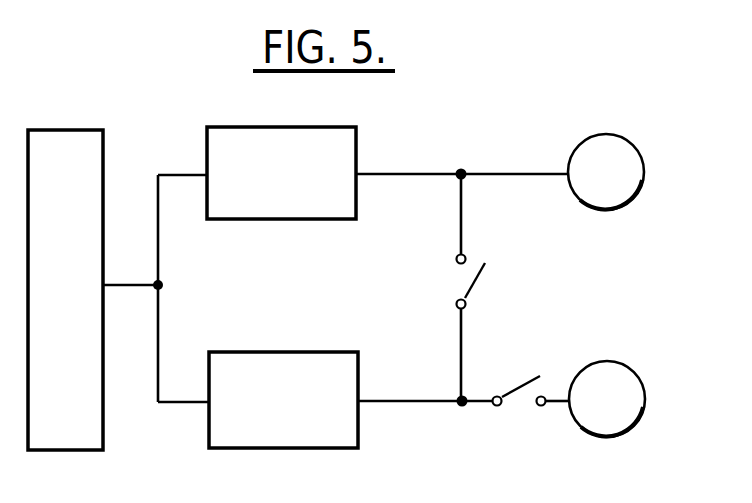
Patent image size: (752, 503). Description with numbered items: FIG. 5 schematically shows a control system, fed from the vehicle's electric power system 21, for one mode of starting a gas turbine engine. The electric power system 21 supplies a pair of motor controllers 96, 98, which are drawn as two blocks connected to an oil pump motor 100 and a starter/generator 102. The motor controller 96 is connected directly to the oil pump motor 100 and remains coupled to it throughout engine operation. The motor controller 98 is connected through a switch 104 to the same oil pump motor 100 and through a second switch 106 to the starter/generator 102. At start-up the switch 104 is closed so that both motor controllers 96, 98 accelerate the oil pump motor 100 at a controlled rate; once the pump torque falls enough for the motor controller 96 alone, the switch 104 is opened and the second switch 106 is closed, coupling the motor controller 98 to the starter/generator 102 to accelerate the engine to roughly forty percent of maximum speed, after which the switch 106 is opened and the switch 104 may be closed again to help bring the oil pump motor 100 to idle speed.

The electric power system 21 is at (74, 298).
The motor controller 96 is at (289, 188).
The motor controller 98 is at (276, 410).
The oil pump motor 100 is at (640, 163).
The starter/generator 102 is at (641, 373).
The switch 104 is at (479, 283).
The second switch 106 is at (522, 378).